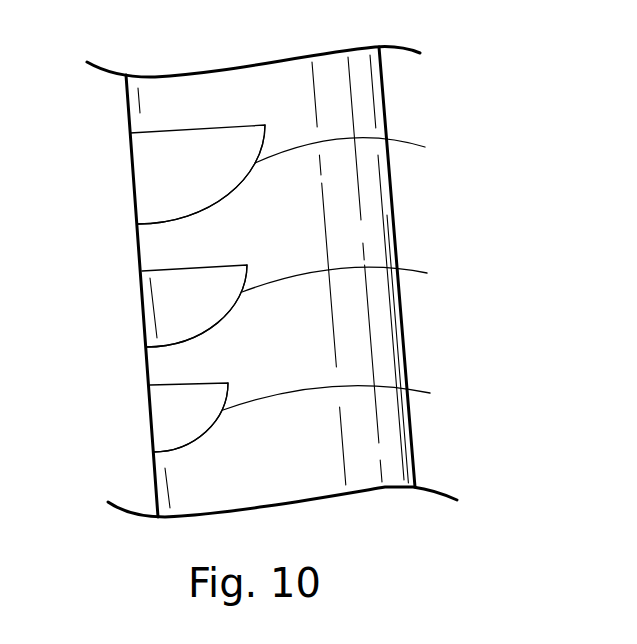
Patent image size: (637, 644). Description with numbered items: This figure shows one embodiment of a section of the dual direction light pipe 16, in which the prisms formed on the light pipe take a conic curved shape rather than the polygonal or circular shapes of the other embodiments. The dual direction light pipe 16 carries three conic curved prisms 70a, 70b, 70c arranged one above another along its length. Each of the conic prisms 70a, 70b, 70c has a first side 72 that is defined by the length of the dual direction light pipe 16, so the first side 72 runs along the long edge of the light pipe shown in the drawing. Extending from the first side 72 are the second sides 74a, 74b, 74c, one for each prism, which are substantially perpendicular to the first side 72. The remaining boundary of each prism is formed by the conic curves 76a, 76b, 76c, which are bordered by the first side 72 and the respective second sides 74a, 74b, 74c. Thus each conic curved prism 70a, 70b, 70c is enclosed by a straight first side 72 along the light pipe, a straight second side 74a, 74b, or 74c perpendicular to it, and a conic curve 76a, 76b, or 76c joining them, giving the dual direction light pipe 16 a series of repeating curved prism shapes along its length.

The dual direction light pipe 16 is at (384, 97).
The first side 72 is at (128, 113).
The second side 74a is at (193, 383).
The second side 74b is at (188, 267).
The second side 74c is at (198, 128).
The conic curve 76a is at (353, 394).
The conic curve 76b is at (361, 279).
The conic curve 76c is at (365, 148).
The conic curved prism 70a is at (196, 437).
The conic curved prism 70b is at (226, 312).
The conic curved prism 70c is at (231, 189).